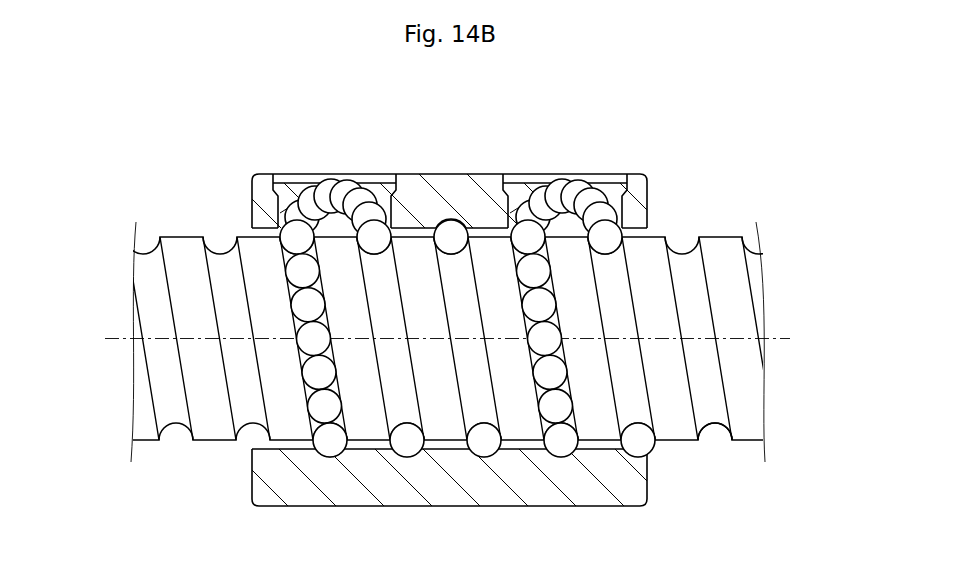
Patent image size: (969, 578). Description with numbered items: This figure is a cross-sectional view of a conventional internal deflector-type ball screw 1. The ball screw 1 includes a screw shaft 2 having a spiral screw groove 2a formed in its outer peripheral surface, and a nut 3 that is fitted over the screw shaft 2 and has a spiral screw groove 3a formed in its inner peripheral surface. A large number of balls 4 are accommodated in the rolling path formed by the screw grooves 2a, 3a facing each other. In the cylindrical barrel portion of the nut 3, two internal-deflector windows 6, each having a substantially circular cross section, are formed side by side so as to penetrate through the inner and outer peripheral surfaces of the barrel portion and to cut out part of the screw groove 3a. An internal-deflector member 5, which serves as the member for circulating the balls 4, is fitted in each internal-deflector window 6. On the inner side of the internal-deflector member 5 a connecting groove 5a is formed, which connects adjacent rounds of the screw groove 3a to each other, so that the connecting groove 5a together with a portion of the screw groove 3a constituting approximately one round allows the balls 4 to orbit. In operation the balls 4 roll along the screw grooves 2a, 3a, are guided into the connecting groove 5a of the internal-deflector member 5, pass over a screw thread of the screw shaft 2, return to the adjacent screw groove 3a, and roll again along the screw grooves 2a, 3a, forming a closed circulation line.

The ball screw 1 is at (655, 136).
The screw shaft 2 is at (716, 234).
The screw groove 2a is at (718, 431).
The nut 3 is at (436, 171).
The screw groove 3a is at (337, 457).
The balls 4 is at (300, 305).
The internal-deflector member 5 is at (288, 172).
The connecting groove 5a is at (338, 193).
The internal-deflector windows 6 is at (374, 196).